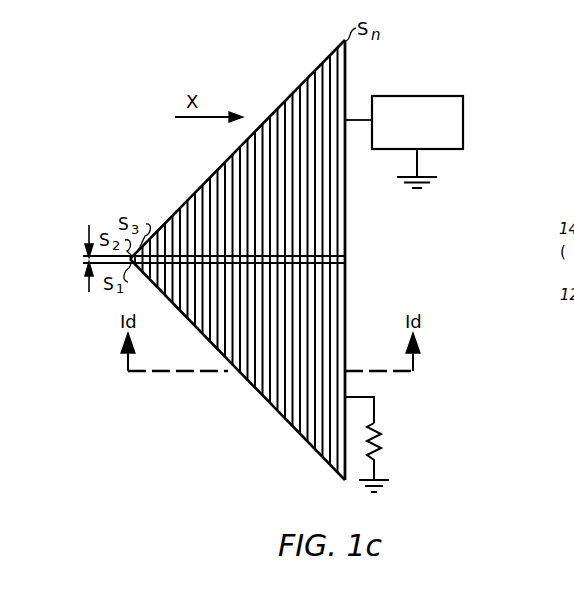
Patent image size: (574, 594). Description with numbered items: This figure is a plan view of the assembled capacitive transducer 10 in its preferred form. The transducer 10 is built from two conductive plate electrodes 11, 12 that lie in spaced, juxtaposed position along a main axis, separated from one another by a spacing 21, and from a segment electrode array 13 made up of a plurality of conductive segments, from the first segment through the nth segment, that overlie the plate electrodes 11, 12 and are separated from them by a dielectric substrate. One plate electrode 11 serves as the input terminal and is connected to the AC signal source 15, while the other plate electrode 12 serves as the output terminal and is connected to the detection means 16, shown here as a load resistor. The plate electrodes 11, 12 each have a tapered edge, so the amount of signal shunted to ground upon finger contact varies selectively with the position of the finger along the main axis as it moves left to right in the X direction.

The capacitive transducer 10 is at (252, 250).
The plate electrode 11 is at (276, 102).
The plate electrode 12 is at (262, 397).
The segment electrode array 13 is at (330, 95).
The AC signal source 15 is at (452, 96).
The detection means 16 is at (378, 425).
The spacing 21 is at (89, 292).